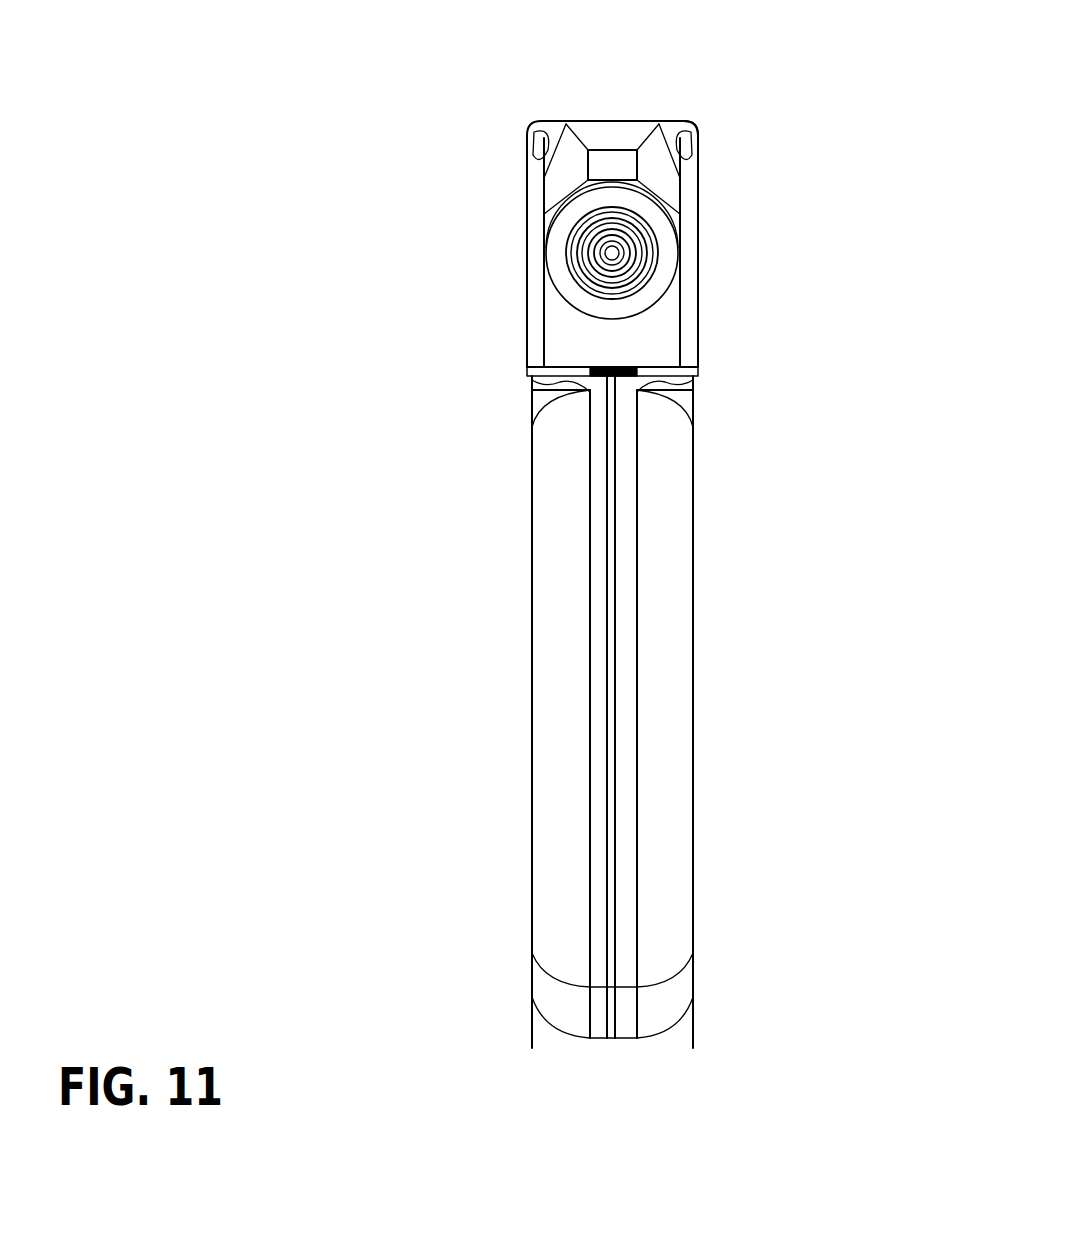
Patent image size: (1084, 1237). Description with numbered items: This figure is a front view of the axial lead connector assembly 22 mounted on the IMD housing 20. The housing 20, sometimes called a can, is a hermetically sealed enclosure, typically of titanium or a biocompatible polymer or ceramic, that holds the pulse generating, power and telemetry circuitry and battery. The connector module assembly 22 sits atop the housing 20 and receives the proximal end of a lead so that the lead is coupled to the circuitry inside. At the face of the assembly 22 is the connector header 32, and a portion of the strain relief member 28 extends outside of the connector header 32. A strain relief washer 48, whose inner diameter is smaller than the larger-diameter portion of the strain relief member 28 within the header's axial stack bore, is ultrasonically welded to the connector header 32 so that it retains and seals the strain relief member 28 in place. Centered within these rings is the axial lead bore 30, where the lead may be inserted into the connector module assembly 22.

The housing 20 is at (692, 686).
The axial lead connector assembly 22 is at (472, 133).
The strain relief member 28 is at (532, 303).
The axial lead bore 30 is at (617, 250).
The connector header 32 is at (683, 122).
The strain relief washer 48 is at (658, 215).